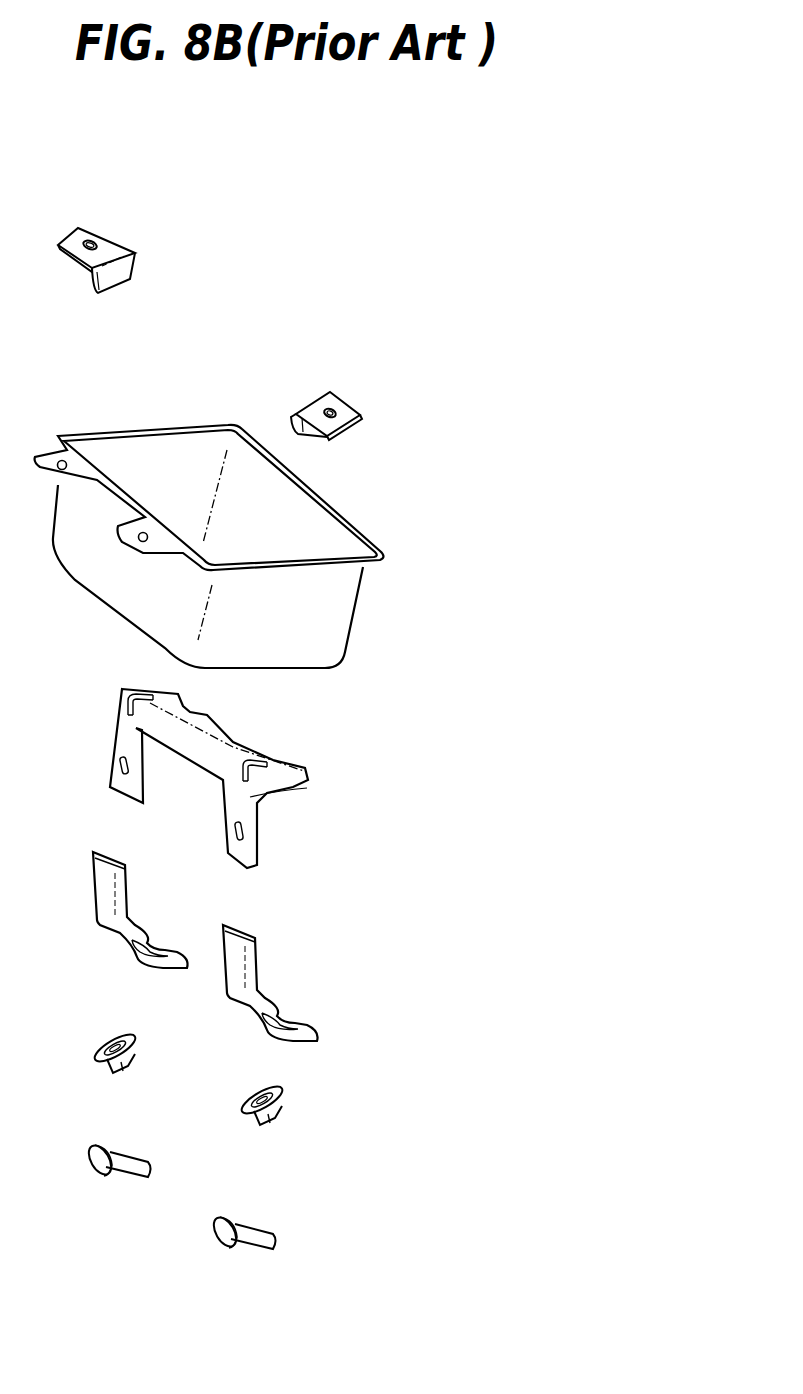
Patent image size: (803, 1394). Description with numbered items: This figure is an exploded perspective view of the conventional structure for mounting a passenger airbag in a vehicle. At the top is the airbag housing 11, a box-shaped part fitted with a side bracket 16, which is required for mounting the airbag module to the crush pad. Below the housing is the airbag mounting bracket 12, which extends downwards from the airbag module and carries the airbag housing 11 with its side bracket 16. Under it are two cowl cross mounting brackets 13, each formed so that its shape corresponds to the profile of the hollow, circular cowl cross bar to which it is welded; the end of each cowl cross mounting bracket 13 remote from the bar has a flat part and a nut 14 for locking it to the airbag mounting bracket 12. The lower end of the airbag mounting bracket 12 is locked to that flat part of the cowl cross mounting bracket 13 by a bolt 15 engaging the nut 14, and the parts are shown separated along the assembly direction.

The airbag housing 11 is at (333, 616).
The airbag mounting bracket 12 is at (243, 797).
The cowl cross mounting bracket 13 is at (240, 968).
The nut 14 is at (283, 1100).
The bolt 15 is at (273, 1232).
The side bracket 16 is at (357, 408).